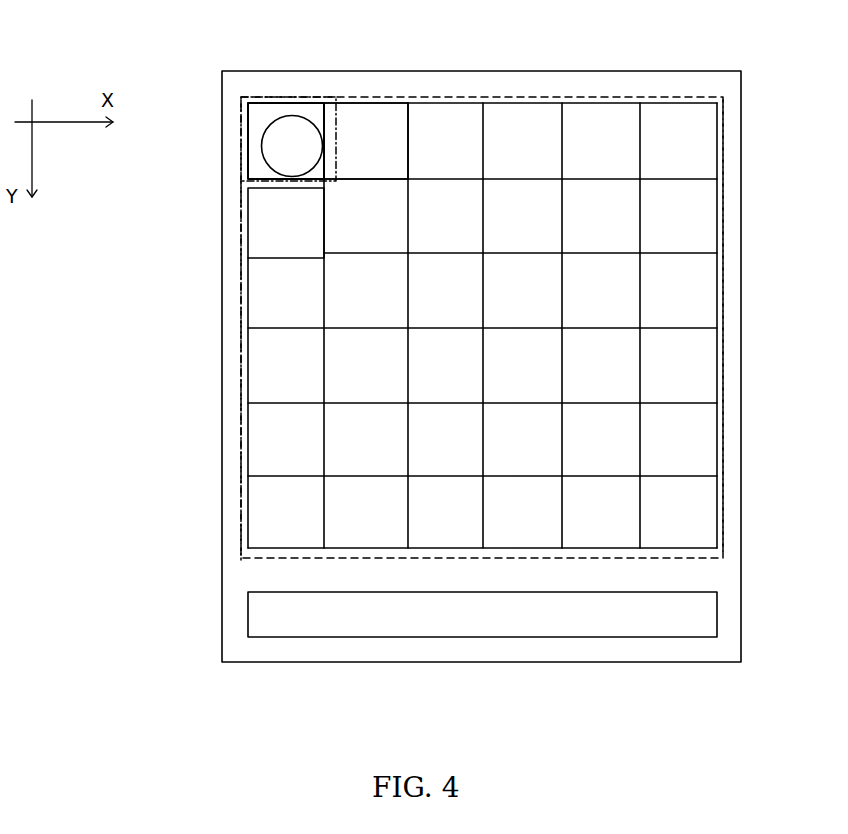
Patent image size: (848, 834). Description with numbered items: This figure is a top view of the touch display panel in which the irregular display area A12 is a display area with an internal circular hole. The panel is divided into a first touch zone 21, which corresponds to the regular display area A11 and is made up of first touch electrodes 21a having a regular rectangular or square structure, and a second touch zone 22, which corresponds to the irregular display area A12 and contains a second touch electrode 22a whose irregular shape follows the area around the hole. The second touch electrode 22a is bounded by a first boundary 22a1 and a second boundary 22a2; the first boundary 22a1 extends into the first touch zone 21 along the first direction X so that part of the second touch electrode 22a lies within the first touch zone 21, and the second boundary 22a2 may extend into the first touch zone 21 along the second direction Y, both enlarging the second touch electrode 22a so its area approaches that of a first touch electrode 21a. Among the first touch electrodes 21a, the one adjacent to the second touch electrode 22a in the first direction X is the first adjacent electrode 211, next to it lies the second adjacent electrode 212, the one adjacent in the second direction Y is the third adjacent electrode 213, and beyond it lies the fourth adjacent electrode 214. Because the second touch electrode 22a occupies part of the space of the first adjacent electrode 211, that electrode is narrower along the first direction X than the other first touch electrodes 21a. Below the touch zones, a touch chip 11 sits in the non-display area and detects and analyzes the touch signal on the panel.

The touch chip 11 is at (565, 628).
The first touch zone 21 is at (706, 94).
The regular display area A11 is at (531, 297).
The first touch electrode 21a is at (705, 152).
The first adjacent electrode 211 is at (375, 117).
The second adjacent electrode 212 is at (445, 117).
The third adjacent electrode 213 is at (258, 217).
The fourth adjacent electrode 214 is at (256, 283).
The second touch zone 22 is at (269, 90).
The irregular display area A12 is at (240, 296).
The second touch electrode 22a is at (258, 130).
The first boundary 22a1 is at (370, 147).
The second boundary 22a2 is at (271, 196).